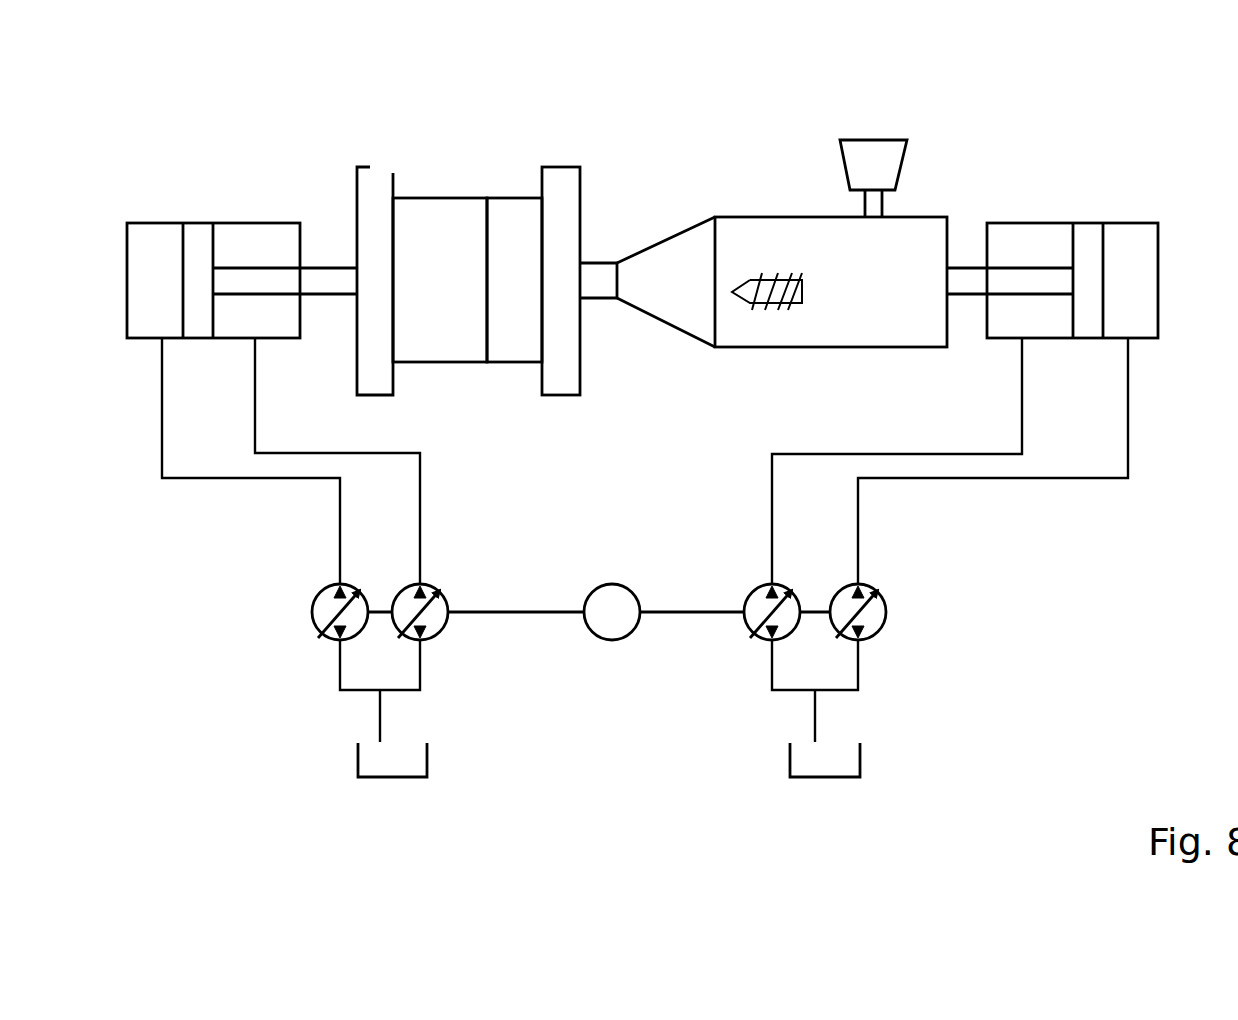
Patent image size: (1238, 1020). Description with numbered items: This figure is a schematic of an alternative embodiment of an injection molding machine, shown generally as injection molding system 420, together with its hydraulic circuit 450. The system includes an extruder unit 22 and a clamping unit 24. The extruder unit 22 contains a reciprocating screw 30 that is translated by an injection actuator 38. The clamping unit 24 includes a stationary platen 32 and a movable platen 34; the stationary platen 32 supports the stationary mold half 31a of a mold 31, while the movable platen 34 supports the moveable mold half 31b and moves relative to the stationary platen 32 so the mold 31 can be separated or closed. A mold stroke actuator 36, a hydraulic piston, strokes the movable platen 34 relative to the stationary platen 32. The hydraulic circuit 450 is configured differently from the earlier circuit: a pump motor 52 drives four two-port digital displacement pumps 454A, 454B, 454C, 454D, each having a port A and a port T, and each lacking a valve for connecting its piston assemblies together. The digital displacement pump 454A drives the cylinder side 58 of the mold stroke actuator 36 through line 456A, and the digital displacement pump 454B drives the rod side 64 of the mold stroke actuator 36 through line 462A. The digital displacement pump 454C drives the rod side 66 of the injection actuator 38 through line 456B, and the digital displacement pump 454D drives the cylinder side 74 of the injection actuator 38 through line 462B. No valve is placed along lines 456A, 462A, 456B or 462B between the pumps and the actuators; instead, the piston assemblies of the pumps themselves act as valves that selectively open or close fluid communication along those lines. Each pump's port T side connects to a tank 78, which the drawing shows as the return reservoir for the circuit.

The injection molding system 420 is at (144, 118).
The clamping unit 24 is at (345, 136).
The mold 31 is at (500, 132).
The stationary mold half 31a is at (502, 198).
The moveable mold half 31b is at (427, 198).
The stationary platen 32 is at (578, 372).
The movable platen 34 is at (394, 374).
The extruder unit 22 is at (717, 166).
The reciprocating screw 30 is at (785, 303).
The mold stroke actuator 36 is at (242, 255).
The injection actuator 38 is at (1078, 222).
The cylinder side 58 is at (155, 280).
The rod side 64 is at (256, 280).
The rod side 66 is at (1030, 280).
The cylinder side 74 is at (1130, 280).
The hydraulic circuit 450 is at (1060, 648).
The line 456A is at (162, 418).
The line 462A is at (418, 498).
The line 456B is at (772, 510).
The line 462B is at (860, 533).
The digital displacement pump 454A is at (311, 608).
The digital displacement pump 454B is at (450, 635).
The digital displacement pump 454C is at (755, 588).
The digital displacement pump 454D is at (880, 615).
The pump motor 52 is at (622, 633).
The hydraulic fluid tank 78 is at (428, 750).